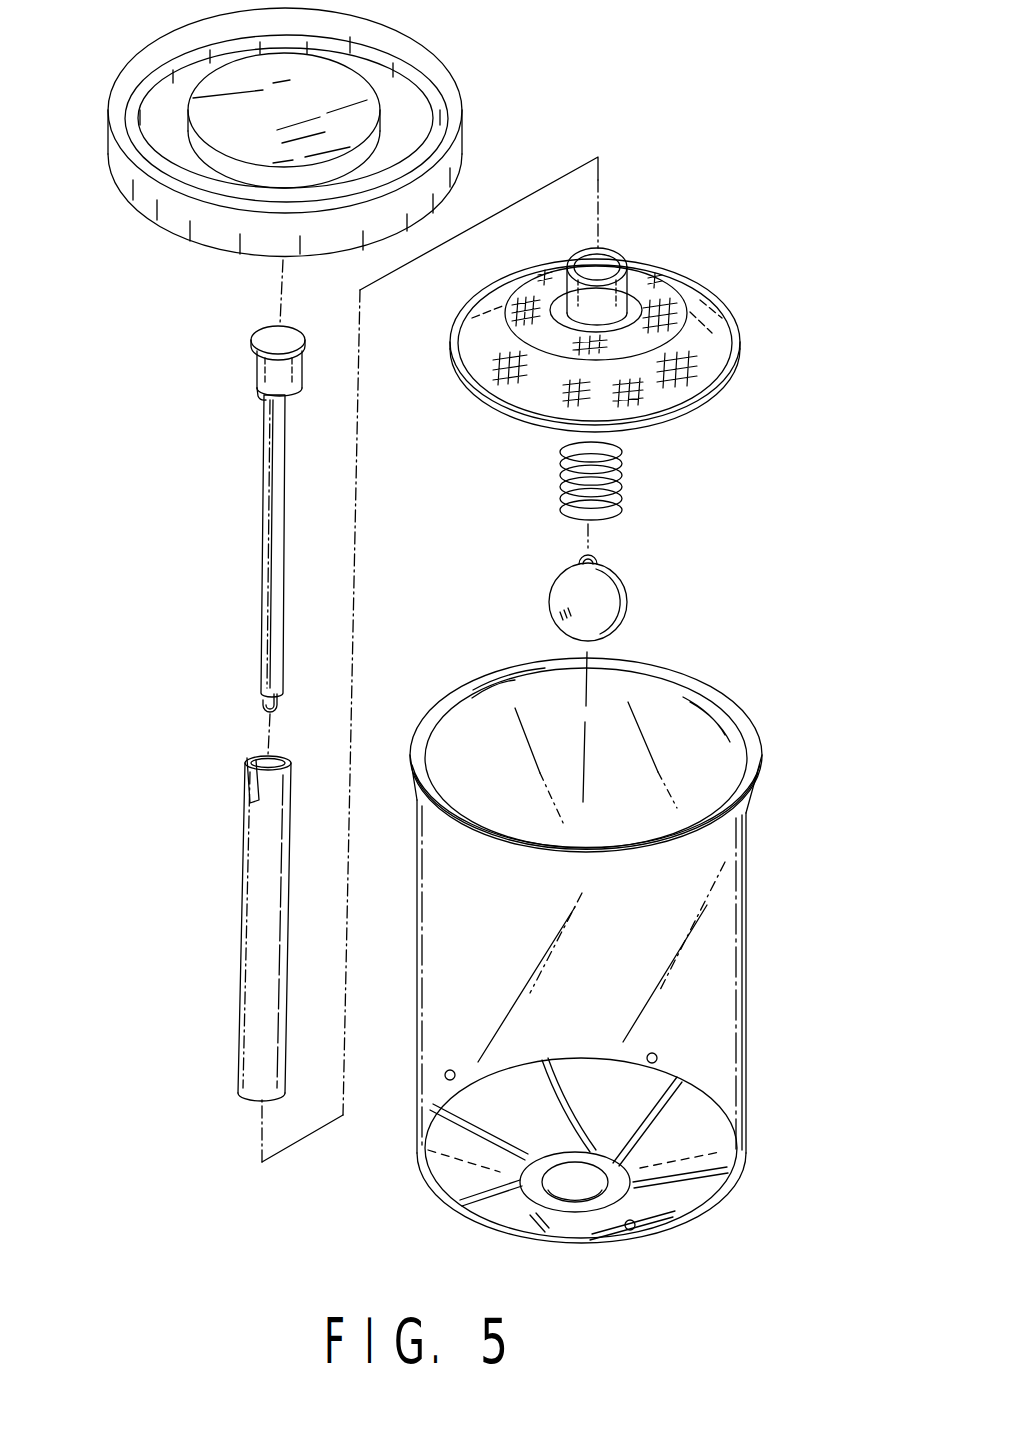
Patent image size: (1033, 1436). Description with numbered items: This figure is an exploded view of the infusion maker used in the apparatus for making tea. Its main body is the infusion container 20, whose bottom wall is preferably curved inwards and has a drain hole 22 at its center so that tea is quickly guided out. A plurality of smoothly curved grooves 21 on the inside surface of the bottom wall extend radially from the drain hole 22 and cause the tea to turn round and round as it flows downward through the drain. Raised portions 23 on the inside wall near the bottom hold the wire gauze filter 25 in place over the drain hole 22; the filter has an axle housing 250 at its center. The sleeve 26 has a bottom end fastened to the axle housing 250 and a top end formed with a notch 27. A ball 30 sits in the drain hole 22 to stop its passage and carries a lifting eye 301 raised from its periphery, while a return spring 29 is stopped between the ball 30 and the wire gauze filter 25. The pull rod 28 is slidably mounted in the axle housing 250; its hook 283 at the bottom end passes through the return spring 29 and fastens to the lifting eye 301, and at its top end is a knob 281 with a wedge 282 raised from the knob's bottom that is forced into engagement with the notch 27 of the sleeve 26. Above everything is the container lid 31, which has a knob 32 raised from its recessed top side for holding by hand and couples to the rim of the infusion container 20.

The infusion container 20 is at (746, 968).
The smoothly curved grooves 21 is at (660, 1115).
The drain hole 22 is at (580, 1195).
The raised portions 23 is at (660, 1056).
The wire gauze filter 25 is at (705, 318).
The axle housing 250 is at (608, 263).
The sleeve 26 is at (245, 925).
The notch 27 is at (246, 790).
The pull rod 28 is at (272, 485).
The knob 281 is at (252, 337).
The wedge 282 is at (260, 396).
The hook 283 is at (263, 705).
The return spring 29 is at (560, 484).
The ball 30 is at (610, 592).
The lifting eye 301 is at (597, 557).
The container lid 31 is at (443, 72).
The knob 32 is at (190, 125).